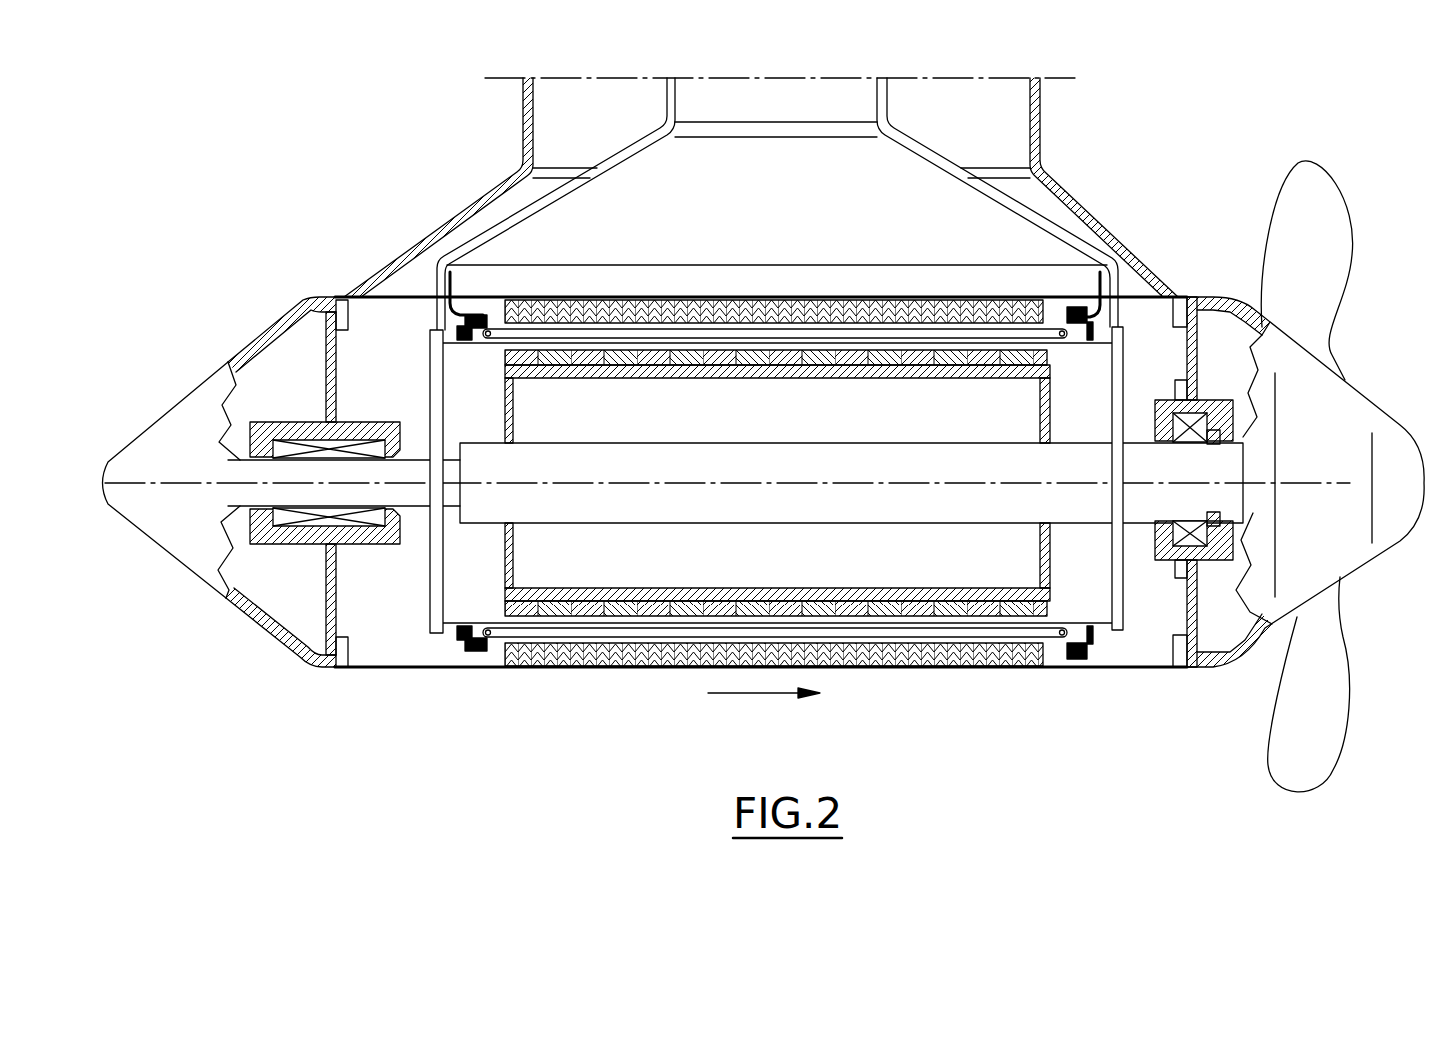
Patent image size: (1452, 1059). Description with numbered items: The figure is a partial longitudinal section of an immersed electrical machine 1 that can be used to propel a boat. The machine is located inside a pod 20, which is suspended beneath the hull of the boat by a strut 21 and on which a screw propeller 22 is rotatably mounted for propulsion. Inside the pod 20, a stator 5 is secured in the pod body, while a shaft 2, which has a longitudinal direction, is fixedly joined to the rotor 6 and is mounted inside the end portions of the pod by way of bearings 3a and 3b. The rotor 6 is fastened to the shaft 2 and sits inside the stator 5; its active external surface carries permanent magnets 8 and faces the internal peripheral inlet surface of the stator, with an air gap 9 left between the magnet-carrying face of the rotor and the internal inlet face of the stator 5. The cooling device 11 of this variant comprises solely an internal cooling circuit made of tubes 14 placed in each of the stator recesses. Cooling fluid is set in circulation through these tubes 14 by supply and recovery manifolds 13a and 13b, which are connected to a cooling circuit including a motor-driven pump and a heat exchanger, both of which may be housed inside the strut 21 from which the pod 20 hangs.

The electrical machine 1 is at (281, 706).
The shaft 2 is at (1063, 463).
The bearing 3a is at (285, 470).
The bearing 3b is at (1187, 462).
The stator 5 is at (570, 668).
The rotor 6 is at (1027, 568).
The permanent magnets 8 is at (676, 350).
The air gap 9 is at (877, 293).
The cooling device 11 is at (1037, 205).
The supply and recovery manifold 13a is at (1120, 383).
The supply and recovery manifold 13b is at (433, 602).
The tubes 14 is at (460, 353).
The pod 20 is at (370, 670).
The strut 21 is at (422, 247).
The screw propeller 22 is at (1327, 703).